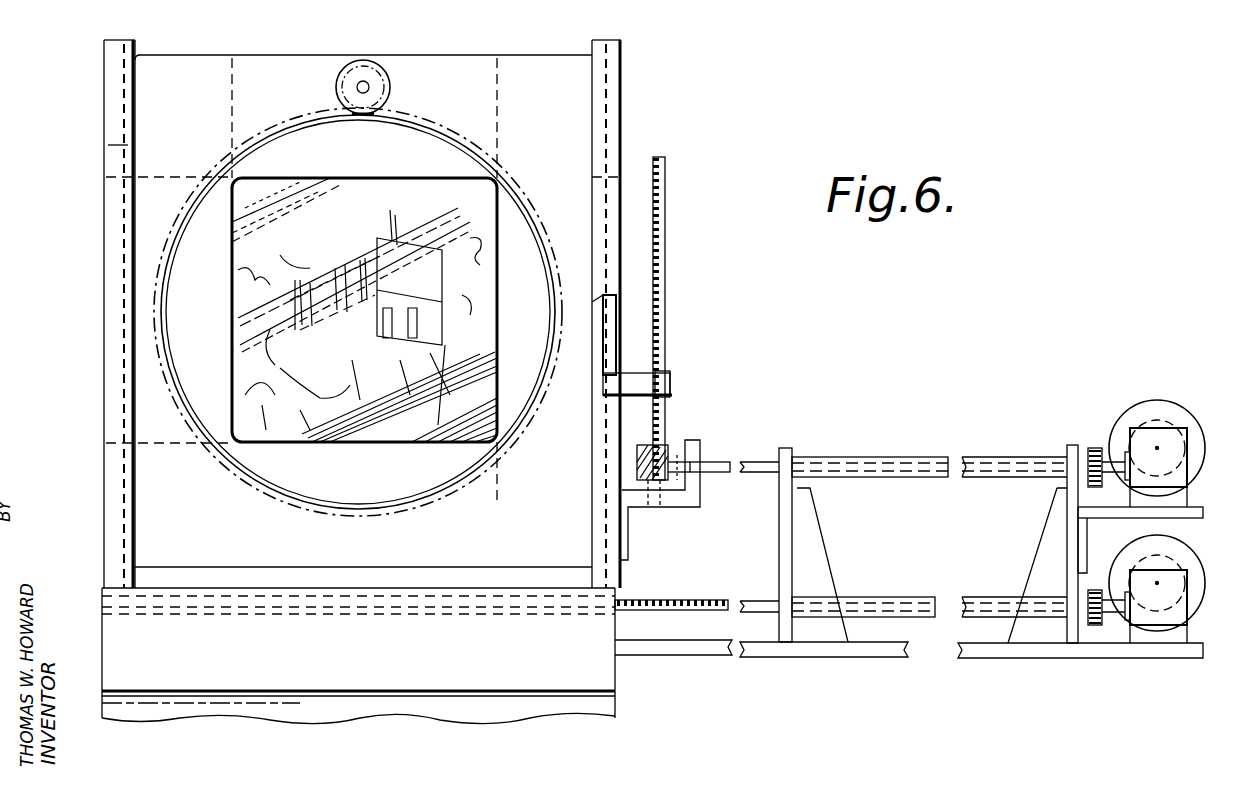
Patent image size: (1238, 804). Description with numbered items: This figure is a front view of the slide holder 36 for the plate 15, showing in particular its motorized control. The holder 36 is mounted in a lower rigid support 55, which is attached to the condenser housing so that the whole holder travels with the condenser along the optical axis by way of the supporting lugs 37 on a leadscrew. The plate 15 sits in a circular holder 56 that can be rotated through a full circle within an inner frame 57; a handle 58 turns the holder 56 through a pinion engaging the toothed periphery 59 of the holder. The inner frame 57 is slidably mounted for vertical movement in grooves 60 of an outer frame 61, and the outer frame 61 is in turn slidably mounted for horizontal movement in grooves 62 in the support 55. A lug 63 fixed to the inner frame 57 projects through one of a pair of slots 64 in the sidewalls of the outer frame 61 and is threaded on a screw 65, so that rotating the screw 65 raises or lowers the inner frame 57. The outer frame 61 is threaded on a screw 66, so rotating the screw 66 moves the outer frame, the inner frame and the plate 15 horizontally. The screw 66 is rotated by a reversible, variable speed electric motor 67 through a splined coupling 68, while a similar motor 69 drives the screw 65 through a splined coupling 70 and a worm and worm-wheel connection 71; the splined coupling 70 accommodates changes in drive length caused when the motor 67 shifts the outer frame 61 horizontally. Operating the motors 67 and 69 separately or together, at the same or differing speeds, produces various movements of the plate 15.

The plate 15 is at (484, 302).
The slide holder 36 is at (96, 368).
The supporting lugs 37 is at (277, 708).
The support 55 is at (172, 660).
The circular holder 56 is at (462, 160).
The inner frame 57 is at (250, 90).
The handle 58 is at (392, 90).
The toothed periphery 59 is at (222, 166).
The grooves 60 is at (108, 145).
The outer frame 61 is at (112, 216).
The grooves 62 is at (337, 614).
The lug 63 is at (672, 384).
The slots 64 is at (612, 331).
The screw 65 is at (667, 240).
The screw 66 is at (690, 598).
The electric motor 67 is at (1155, 628).
The splined coupling 68 is at (888, 596).
The electric motor 69 is at (1157, 402).
The splined coupling 70 is at (902, 448).
The worm and worm-wheel connection 71 is at (668, 440).